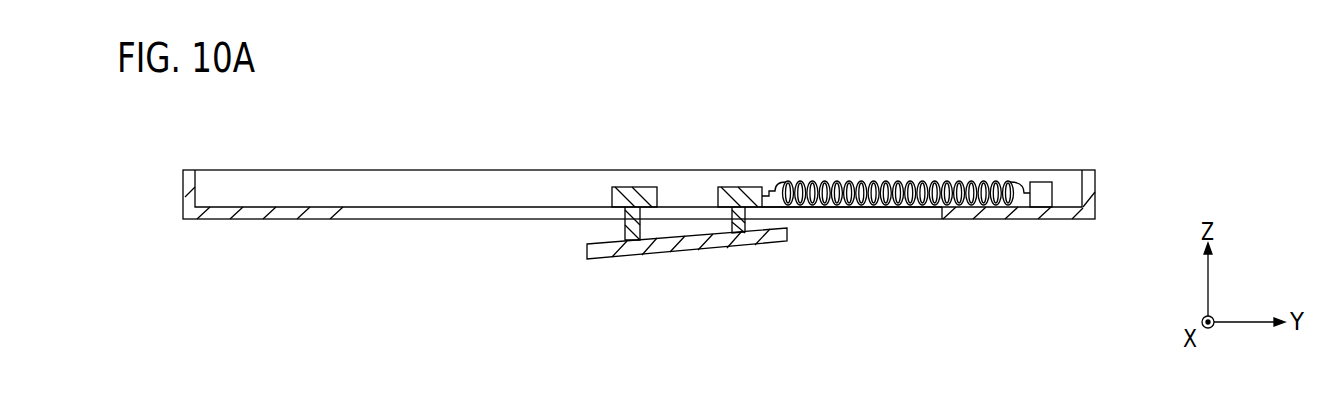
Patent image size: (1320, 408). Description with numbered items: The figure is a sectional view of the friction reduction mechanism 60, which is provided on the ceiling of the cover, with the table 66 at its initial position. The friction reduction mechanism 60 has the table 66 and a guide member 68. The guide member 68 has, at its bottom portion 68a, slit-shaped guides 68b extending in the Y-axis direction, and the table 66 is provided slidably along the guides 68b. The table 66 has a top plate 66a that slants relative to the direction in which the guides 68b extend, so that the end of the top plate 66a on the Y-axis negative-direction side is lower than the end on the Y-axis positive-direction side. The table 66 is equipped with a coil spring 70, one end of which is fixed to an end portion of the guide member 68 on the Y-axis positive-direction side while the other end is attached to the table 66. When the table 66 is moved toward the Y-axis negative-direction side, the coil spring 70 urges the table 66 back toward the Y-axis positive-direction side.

The friction reduction mechanism 60 is at (1103, 162).
The table 66 is at (666, 284).
The top plate 66a is at (687, 252).
The guide member 68 is at (907, 200).
The bottom portion 68a is at (988, 213).
The guides 68b is at (883, 213).
The coil spring 70 is at (878, 170).